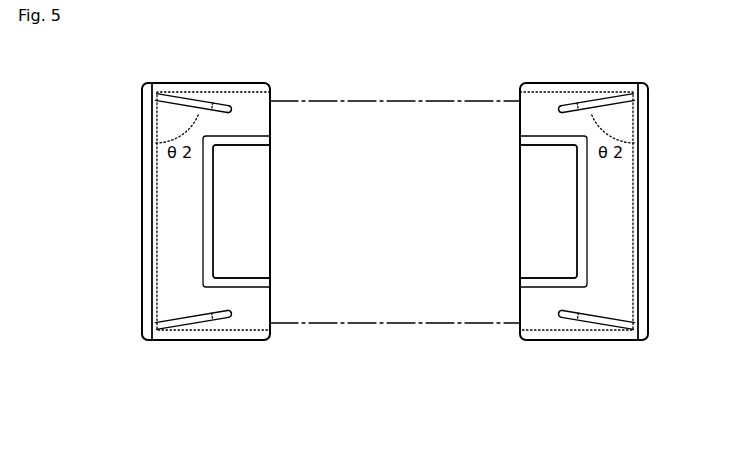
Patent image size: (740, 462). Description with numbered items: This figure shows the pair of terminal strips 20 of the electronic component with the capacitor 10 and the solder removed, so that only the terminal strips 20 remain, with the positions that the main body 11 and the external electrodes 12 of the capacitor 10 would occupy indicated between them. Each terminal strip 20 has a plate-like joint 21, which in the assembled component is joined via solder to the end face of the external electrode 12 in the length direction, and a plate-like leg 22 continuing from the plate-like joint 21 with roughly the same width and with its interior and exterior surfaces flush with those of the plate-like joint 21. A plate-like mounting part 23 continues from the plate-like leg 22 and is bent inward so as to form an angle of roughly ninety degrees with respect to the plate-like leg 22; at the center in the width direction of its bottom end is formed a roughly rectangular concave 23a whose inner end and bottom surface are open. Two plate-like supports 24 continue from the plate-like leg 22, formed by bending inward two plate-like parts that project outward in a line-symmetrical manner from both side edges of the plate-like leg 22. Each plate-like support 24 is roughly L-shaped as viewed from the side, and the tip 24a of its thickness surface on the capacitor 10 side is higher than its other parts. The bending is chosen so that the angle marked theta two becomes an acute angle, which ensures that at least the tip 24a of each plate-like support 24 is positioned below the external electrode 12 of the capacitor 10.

The multilayer ceramic capacitor 10 is at (337, 101).
The main body 11 is at (418, 117).
The external electrode 12 is at (251, 92).
The terminal strip 20 is at (141, 148).
The plate-like joint 21 is at (145, 213).
The plate-like leg 22 is at (395, 211).
The plate-like mounting part 23 is at (250, 318).
The concave 23a is at (258, 212).
The plate-like support 24 is at (183, 93).
The tip 24a is at (227, 103).